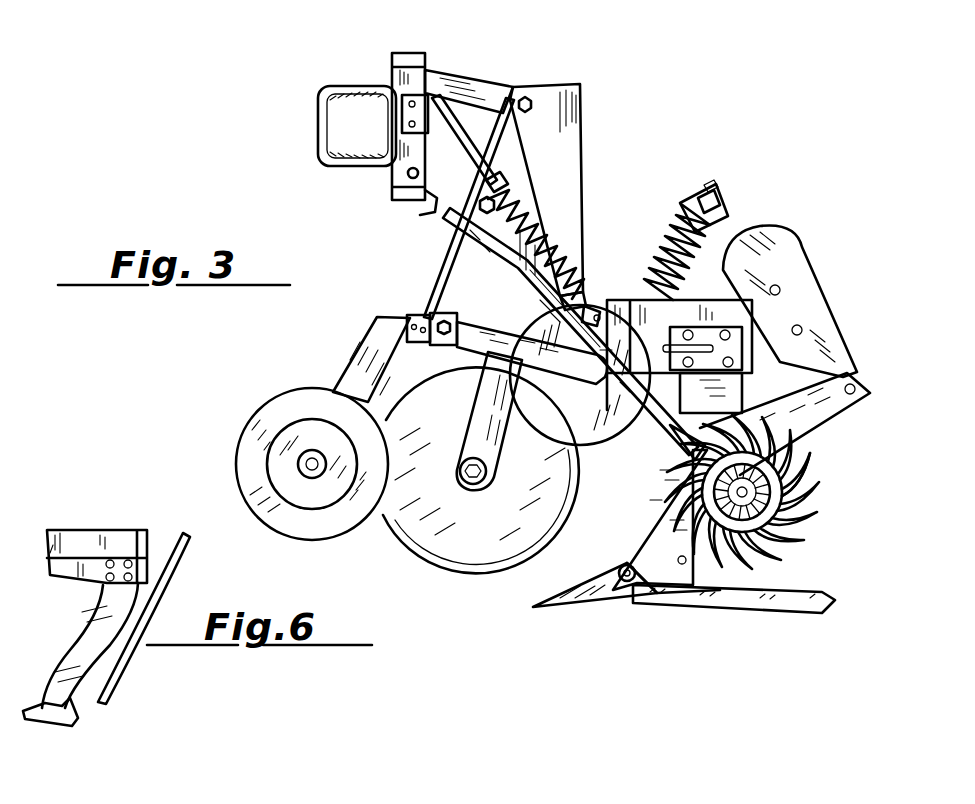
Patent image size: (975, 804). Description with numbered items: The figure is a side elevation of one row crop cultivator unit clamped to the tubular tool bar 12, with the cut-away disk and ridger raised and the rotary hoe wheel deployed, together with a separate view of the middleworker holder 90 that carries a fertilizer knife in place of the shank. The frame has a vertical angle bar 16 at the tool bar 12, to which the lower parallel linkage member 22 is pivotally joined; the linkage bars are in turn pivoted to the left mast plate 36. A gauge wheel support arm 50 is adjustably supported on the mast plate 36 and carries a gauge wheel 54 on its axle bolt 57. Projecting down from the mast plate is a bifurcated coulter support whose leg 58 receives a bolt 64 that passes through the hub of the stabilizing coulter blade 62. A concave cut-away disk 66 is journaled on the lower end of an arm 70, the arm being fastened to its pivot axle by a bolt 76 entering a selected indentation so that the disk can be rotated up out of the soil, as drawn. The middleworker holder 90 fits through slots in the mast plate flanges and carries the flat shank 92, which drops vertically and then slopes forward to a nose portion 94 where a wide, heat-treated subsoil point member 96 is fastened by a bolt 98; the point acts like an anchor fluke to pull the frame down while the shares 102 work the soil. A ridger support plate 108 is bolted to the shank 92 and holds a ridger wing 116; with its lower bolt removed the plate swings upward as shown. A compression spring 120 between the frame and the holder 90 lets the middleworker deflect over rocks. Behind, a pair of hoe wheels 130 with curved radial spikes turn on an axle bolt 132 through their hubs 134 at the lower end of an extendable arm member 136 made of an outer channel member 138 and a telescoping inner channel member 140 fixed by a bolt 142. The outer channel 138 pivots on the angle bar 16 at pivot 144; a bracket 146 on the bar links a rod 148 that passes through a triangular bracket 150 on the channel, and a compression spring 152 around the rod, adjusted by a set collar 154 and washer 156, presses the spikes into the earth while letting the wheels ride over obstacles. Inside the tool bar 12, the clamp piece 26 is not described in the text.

In FIG. 3, the tool bar 12 is at (350, 96).
In FIG. 3, the angle bar 16 is at (412, 52).
In FIG. 3, the parallel linkage member 22 is at (428, 200).
In FIG. 3, the tool bar clamp 26 is at (318, 92).
In FIG. 3, the left mast plate 36 is at (569, 118).
In FIG. 3, the gauge wheel support arm 50 is at (372, 360).
In FIG. 3, the gauge wheel 54 is at (268, 398).
In FIG. 3, the axle bolt 57 is at (305, 466).
In FIG. 3, the coulter support leg 58 is at (492, 420).
In FIG. 3, the stabilizing coulter blade 62 is at (524, 537).
In FIG. 3, the bolt 64 is at (468, 485).
In FIG. 3, the cut-away disk 66 is at (594, 434).
In FIG. 3, the arm 70 is at (478, 340).
In FIG. 3, the bolt 76 is at (446, 320).
In FIG. 6, the middleworker holder 90 is at (118, 543).
In FIG. 3, the shank 92 is at (650, 517).
In FIG. 3, the nose portion 94 is at (612, 570).
In FIG. 3, the subsoil point member 96 is at (560, 598).
In FIG. 3, the bolt 98 is at (628, 584).
In FIG. 3, the share 102 is at (800, 600).
In FIG. 3, the support plate 108 is at (820, 430).
In FIG. 3, the ridger wing 116 is at (770, 256).
In FIG. 3, the compression spring 120 is at (665, 262).
In FIG. 3, the hoe wheel 130 is at (808, 506).
In FIG. 3, the axle bolt 132 is at (808, 461).
In FIG. 3, the hub 134 is at (758, 492).
In FIG. 3, the extendable arm member 136 is at (478, 252).
In FIG. 3, the outer channel member 138 is at (452, 212).
In FIG. 3, the inner channel member 140 is at (670, 432).
In FIG. 3, the bolt 142 is at (600, 312).
In FIG. 3, the pivot 144 is at (407, 173).
In FIG. 3, the bracket 146 is at (408, 103).
In FIG. 3, the rod 148 is at (493, 110).
In FIG. 3, the triangular bracket 150 is at (562, 282).
In FIG. 3, the compression spring 152 is at (545, 220).
In FIG. 3, the set collar 154 is at (500, 182).
In FIG. 3, the washer 156 is at (499, 200).